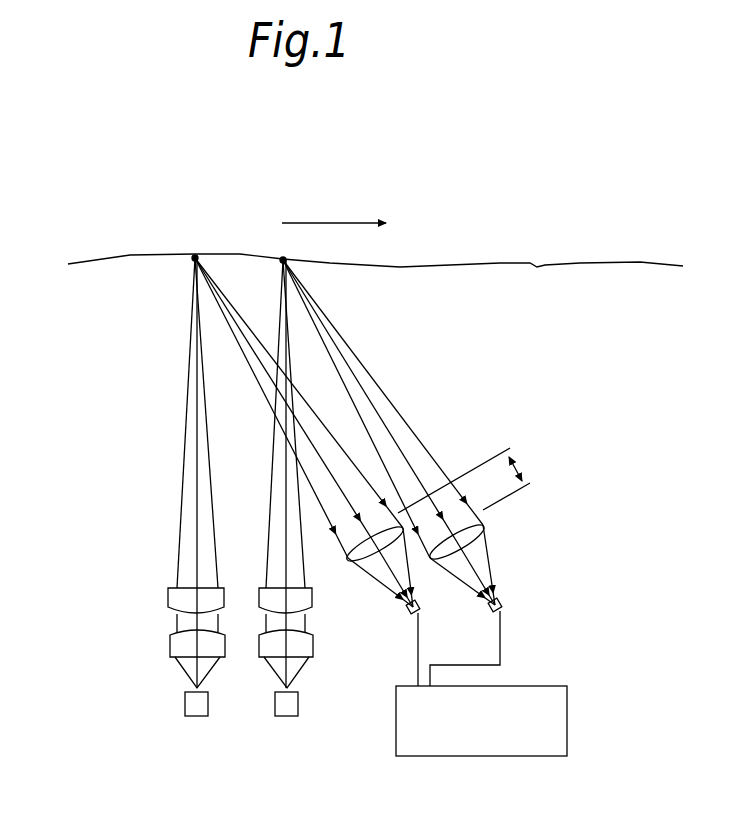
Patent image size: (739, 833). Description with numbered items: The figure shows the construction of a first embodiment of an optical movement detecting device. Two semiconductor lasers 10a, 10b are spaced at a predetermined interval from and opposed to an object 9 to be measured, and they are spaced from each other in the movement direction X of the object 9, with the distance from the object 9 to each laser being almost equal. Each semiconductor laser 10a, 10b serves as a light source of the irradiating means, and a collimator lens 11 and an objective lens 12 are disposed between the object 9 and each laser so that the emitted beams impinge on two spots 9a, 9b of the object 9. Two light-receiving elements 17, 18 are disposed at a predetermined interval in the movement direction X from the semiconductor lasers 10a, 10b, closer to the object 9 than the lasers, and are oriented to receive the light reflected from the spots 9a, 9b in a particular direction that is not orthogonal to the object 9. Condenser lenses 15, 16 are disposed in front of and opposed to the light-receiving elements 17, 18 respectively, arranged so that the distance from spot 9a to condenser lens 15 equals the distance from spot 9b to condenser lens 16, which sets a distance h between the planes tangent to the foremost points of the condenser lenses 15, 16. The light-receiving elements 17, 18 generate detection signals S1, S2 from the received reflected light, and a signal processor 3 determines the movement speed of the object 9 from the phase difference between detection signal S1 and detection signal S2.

The object 9 is at (643, 263).
The light spot 9a is at (196, 254).
The light spot 9b is at (283, 258).
The movement direction X is at (335, 222).
The objective lens 12 is at (258, 590).
The collimator lens 11 is at (170, 645).
The semiconductor laser 10a is at (183, 700).
The semiconductor laser 10b is at (272, 703).
The distance h is at (471, 480).
The condenser lens 15 is at (352, 560).
The condenser lens 16 is at (483, 526).
The light-receiving element 17 is at (410, 614).
The light-receiving element 18 is at (502, 604).
The detection signal S1 is at (438, 649).
The detection signal S2 is at (488, 648).
The signal processor 3 is at (568, 720).